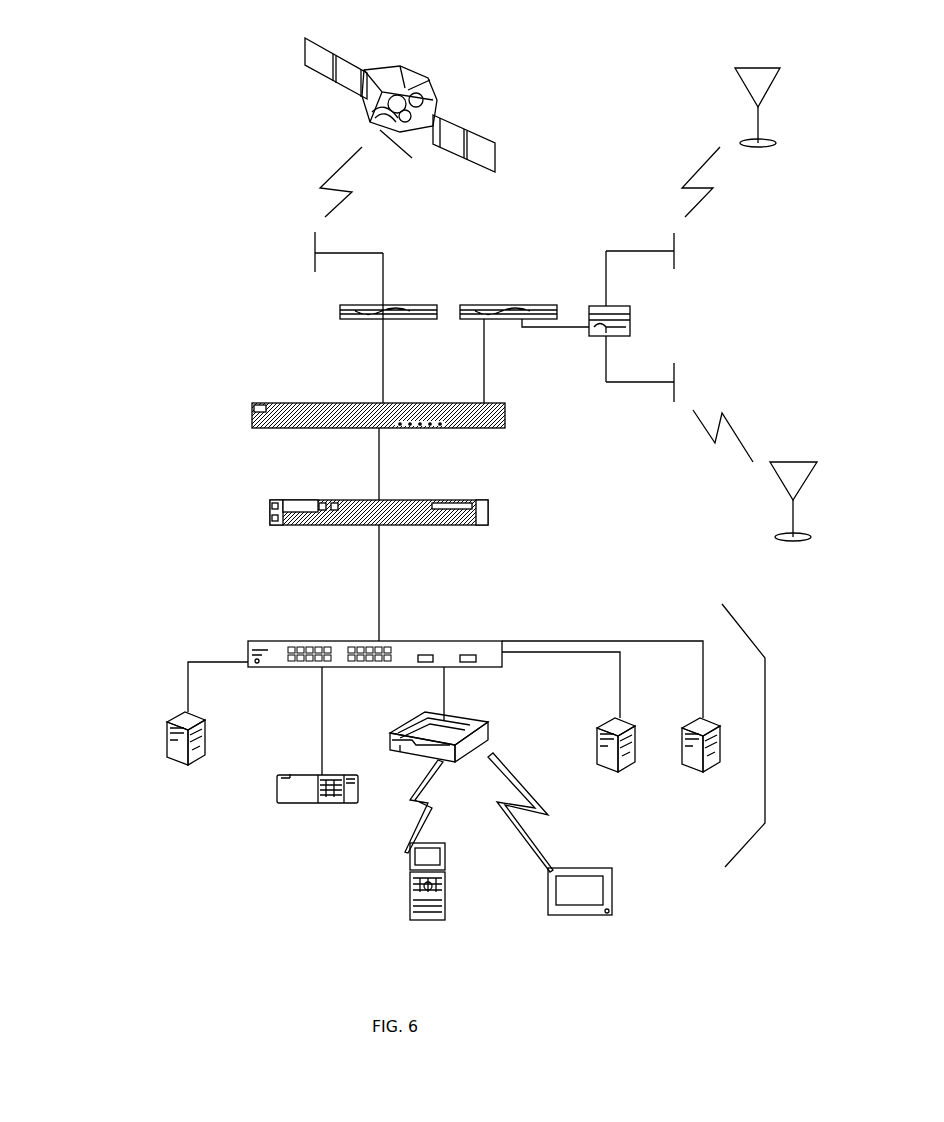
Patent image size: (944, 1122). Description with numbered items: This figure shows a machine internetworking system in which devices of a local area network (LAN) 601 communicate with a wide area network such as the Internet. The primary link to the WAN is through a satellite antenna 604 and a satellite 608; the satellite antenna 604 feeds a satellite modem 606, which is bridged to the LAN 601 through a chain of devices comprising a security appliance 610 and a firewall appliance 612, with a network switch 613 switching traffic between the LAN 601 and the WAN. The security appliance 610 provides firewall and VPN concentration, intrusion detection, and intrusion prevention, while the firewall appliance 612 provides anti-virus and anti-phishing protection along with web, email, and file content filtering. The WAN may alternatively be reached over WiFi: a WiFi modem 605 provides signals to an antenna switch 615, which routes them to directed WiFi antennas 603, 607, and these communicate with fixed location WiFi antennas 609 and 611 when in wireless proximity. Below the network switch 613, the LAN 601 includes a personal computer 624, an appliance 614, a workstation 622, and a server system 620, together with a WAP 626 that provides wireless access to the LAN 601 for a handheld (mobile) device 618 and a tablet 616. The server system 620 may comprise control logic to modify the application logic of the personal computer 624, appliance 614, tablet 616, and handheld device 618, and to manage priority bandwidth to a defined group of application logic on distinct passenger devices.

The local area network (LAN) 601 is at (774, 735).
The directed WiFi antenna 603 is at (733, 255).
The satellite antenna 604 is at (257, 252).
The WiFi modem 605 is at (497, 285).
The satellite modem 606 is at (288, 312).
The directed WiFi antenna 607 is at (733, 387).
The satellite 608 is at (402, 127).
The fixed location WiFi antenna 609 is at (769, 114).
The security appliance 610 is at (272, 415).
The fixed location WiFi antenna 611 is at (717, 475).
The firewall appliance 612 is at (275, 513).
The network switch 613 is at (375, 624).
The appliance 614 is at (325, 806).
The antenna switch 615 is at (655, 319).
The tablet 616 is at (578, 852).
The handheld (mobile) device 618 is at (460, 857).
The server system 620 is at (704, 771).
The workstation 622 is at (603, 761).
The personal computer 624 is at (180, 771).
The WAP (wireless access point) 626 is at (471, 726).